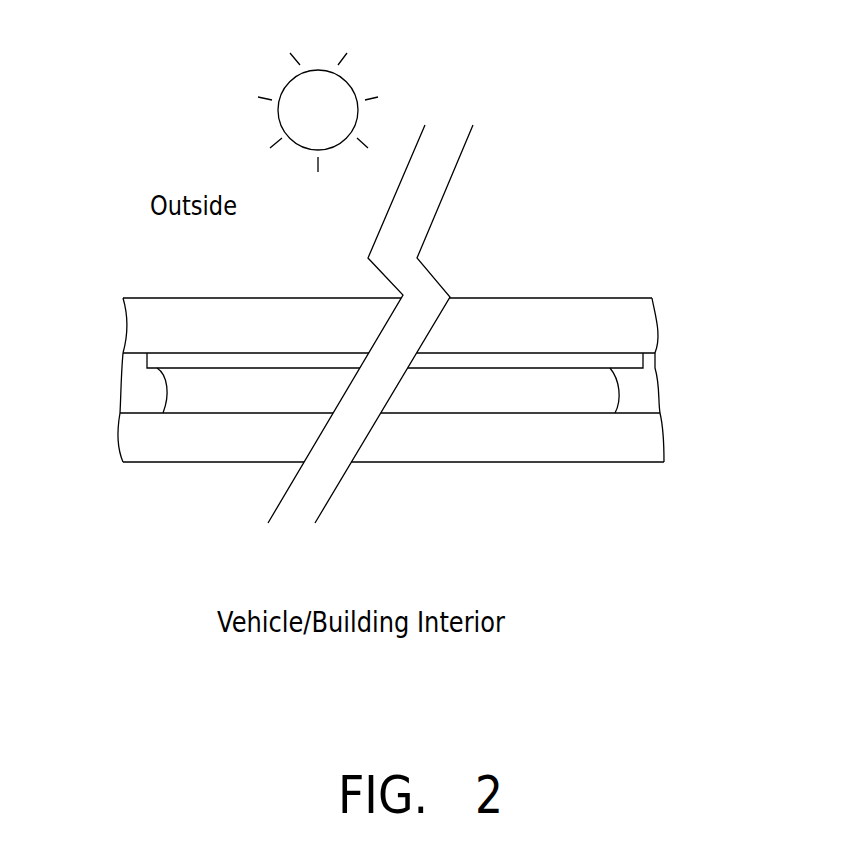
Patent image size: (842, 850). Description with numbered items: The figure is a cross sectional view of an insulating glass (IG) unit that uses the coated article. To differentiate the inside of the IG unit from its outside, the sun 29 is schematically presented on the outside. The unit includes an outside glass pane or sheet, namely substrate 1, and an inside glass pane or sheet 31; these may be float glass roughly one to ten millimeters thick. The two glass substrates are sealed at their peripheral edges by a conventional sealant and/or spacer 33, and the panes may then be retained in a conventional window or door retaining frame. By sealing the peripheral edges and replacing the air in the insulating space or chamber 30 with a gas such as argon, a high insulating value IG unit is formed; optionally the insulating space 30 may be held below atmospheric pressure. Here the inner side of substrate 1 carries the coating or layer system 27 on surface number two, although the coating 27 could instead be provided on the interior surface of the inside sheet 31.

The substrate 1 is at (622, 323).
The coating or layer system 27 is at (627, 362).
The sun 29 is at (342, 95).
The insulating space 30 is at (528, 395).
The inside glass pane or sheet 31 is at (631, 443).
The sealant and/or spacer 33 is at (143, 386).